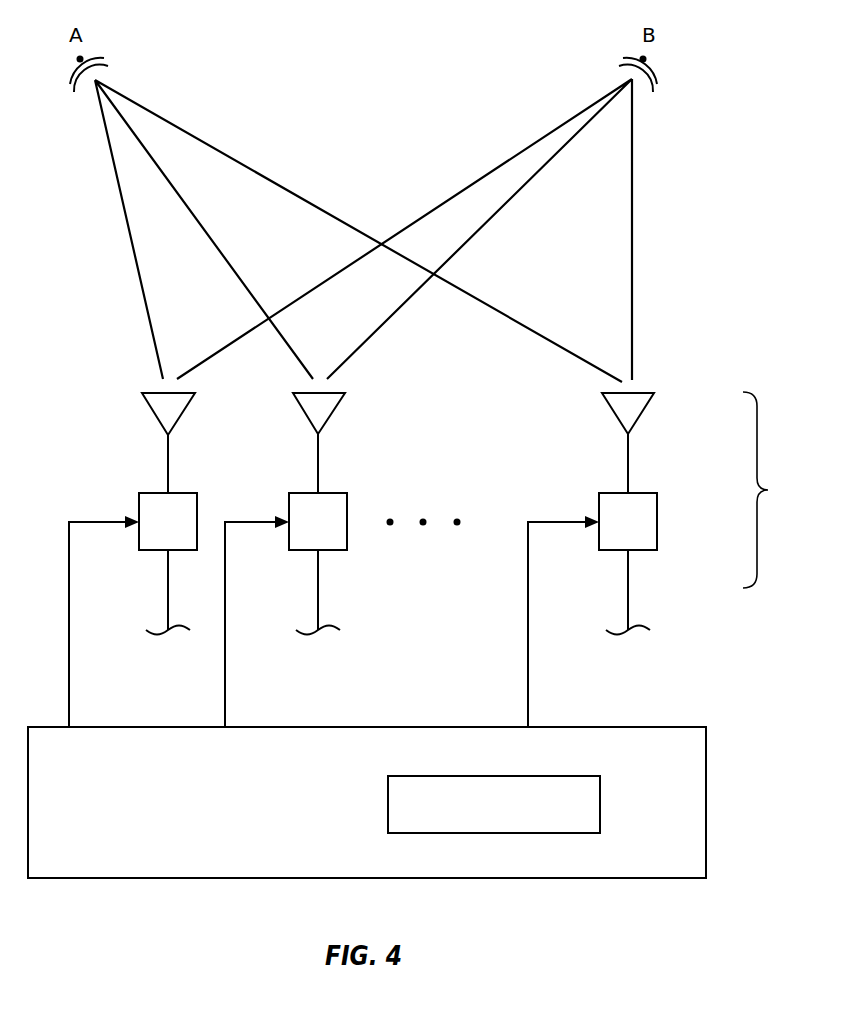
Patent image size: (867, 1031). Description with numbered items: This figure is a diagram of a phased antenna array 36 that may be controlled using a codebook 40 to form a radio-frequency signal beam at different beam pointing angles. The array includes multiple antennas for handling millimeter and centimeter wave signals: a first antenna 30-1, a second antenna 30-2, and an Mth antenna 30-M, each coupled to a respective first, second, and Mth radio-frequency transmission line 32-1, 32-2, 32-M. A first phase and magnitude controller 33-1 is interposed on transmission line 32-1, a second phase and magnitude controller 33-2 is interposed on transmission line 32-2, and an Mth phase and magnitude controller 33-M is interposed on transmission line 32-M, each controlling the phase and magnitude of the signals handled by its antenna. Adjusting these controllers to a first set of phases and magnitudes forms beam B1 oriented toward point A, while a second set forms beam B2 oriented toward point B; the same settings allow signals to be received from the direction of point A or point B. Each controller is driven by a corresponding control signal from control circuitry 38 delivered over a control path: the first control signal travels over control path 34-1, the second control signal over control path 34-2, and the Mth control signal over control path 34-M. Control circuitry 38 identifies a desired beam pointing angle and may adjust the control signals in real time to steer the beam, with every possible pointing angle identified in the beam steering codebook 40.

The first antenna 30-1 is at (152, 413).
The second antenna 30-2 is at (302, 413).
The Mth antenna 30-M is at (612, 413).
The first phase and magnitude controller 33-1 is at (181, 493).
The second phase and magnitude controller 33-2 is at (333, 493).
The Mth phase and magnitude controller 33-M is at (645, 493).
The first radio-frequency transmission line 32-1 is at (168, 602).
The second radio-frequency transmission line 32-2 is at (318, 602).
The Mth radio-frequency transmission line 32-M is at (628, 602).
The first control path 34-1 is at (69, 687).
The second control path 34-2 is at (225, 687).
The Mth control path 34-M is at (528, 687).
The phased antenna array 36 is at (768, 490).
The control circuitry 38 is at (706, 755).
The codebook 40 is at (600, 812).
The beam B1 is at (137, 265).
The beam B2 is at (632, 232).